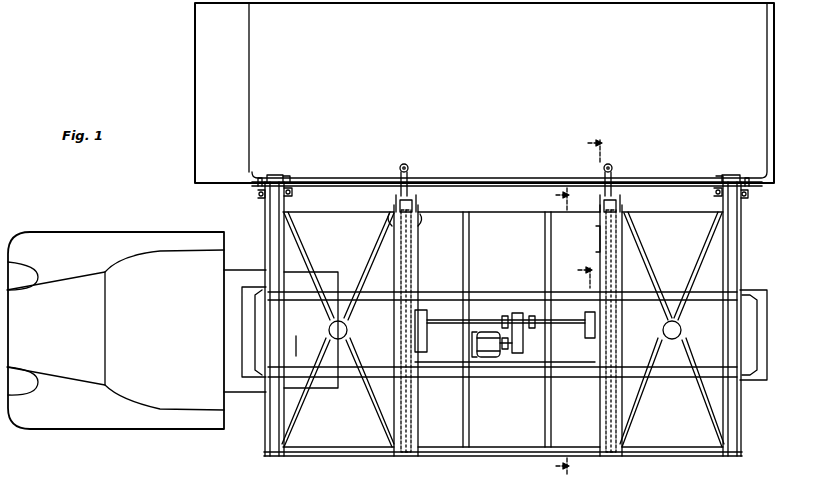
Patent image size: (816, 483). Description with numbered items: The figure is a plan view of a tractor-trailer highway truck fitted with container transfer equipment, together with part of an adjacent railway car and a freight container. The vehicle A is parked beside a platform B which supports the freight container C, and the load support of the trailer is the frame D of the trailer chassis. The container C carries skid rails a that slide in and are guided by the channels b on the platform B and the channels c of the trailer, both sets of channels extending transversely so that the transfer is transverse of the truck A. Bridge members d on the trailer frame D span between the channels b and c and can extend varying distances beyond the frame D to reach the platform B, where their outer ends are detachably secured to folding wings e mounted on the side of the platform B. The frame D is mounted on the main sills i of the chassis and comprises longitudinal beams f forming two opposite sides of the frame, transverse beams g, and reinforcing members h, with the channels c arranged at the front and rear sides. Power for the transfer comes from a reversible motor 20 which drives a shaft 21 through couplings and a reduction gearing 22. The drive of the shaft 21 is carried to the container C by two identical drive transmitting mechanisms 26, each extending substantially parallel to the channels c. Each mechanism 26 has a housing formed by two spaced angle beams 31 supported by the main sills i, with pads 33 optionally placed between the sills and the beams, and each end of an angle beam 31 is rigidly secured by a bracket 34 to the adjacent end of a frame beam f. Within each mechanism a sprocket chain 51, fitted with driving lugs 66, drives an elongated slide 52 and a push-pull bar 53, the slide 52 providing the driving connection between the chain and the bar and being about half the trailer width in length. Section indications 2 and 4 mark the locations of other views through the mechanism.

The vehicle A is at (115, 330).
The platform B is at (230, 87).
The freight container C is at (484, 93).
The frame D is at (352, 458).
The skid rails a is at (286, 176).
The channels b is at (262, 178).
The channels c is at (264, 247).
The bridge members d is at (262, 198).
The folding wings e is at (293, 192).
The longitudinal beams f is at (330, 212).
The transverse beams g is at (542, 421).
The reinforcing members h is at (346, 330).
The main sills i is at (293, 360).
The section line 2 is at (593, 208).
The section line 4 is at (555, 332).
The reversible motor 20 is at (490, 358).
The shaft 21 is at (440, 320).
The reduction gearing 22 is at (530, 342).
The drive transmitting mechanisms 26 is at (404, 456).
The angle beams 31 is at (386, 398).
The pads 33 is at (592, 302).
The bracket 34 is at (390, 222).
The sprocket chain 51 is at (413, 392).
The slide 52 is at (395, 200).
The push-pull bar 53 is at (410, 182).
The driving lugs 66 is at (600, 238).